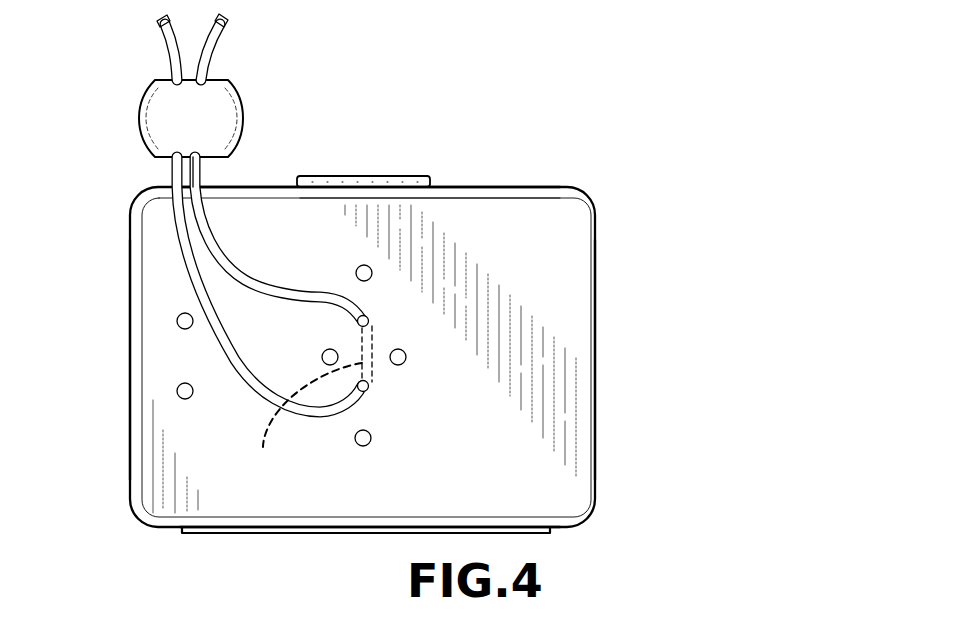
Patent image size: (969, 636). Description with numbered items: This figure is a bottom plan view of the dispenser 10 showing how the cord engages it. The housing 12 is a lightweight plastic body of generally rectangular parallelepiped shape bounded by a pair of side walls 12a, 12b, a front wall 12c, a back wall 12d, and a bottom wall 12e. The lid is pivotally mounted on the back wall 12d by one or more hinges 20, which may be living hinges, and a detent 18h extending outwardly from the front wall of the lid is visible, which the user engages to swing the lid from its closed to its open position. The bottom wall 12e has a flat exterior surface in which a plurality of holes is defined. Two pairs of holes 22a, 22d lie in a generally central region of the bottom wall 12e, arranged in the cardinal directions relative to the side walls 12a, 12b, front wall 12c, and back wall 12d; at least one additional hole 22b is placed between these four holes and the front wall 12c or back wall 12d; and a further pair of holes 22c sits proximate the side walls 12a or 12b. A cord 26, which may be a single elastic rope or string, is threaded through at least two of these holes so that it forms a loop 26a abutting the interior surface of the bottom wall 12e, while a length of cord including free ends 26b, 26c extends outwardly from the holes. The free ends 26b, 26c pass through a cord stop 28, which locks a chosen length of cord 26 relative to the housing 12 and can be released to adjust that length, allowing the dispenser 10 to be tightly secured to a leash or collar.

The dispenser 10 is at (463, 128).
The housing 12 is at (610, 400).
The side wall 12a is at (130, 293).
The side wall 12b is at (595, 295).
The front wall 12c is at (552, 187).
The back wall 12d is at (555, 528).
The bottom wall 12e is at (548, 239).
The detent 18h is at (385, 176).
The hinge 20 is at (277, 536).
The hole 22a is at (370, 321).
The hole 22b is at (364, 272).
The hole 22c is at (184, 321).
The hole 22d is at (329, 356).
The cord 26 is at (226, 224).
The loop 26a is at (303, 419).
The free end 26b is at (221, 27).
The free end 26c is at (167, 32).
The cord stop 28 is at (248, 110).